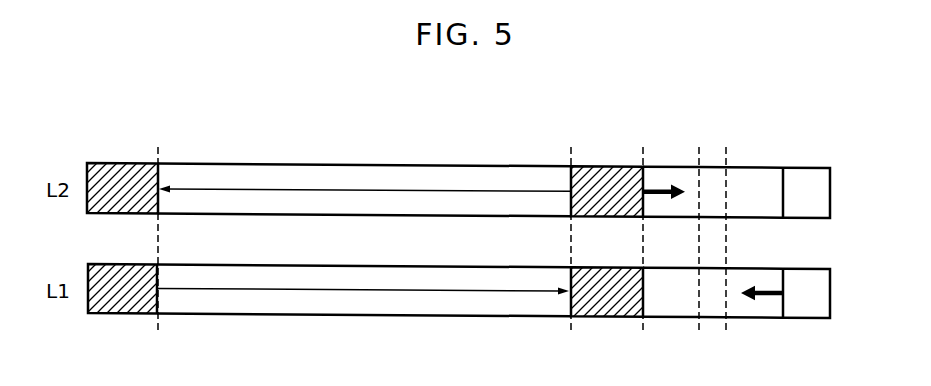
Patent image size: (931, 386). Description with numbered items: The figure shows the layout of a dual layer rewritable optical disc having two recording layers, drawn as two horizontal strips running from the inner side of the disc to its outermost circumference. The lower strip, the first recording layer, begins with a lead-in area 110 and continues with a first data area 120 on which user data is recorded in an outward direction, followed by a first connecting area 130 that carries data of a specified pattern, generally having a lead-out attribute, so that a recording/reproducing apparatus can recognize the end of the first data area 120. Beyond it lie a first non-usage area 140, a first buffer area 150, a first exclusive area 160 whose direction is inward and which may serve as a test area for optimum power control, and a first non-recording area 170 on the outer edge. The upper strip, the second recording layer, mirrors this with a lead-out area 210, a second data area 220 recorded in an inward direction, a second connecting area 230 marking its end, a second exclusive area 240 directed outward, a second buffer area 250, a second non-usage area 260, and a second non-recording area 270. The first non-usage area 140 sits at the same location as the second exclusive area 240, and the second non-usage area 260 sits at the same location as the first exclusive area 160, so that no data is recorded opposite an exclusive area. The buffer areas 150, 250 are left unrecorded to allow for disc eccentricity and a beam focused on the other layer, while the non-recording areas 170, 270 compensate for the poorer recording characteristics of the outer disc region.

The lead-in area 110 is at (121, 309).
The first data area 120 is at (367, 310).
The first connecting area 130 is at (607, 310).
The first non-usage area 140 is at (668, 310).
The first buffer area 150 is at (716, 310).
The first exclusive area 160 is at (764, 310).
The first non-recording area 170 is at (808, 310).
The lead-out area 210 is at (121, 166).
The second data area 220 is at (367, 170).
The second connecting area 230 is at (606, 172).
The second exclusive area 240 is at (668, 178).
The second buffer area 250 is at (716, 178).
The second non-usage area 260 is at (763, 178).
The second non-recording area 270 is at (808, 178).